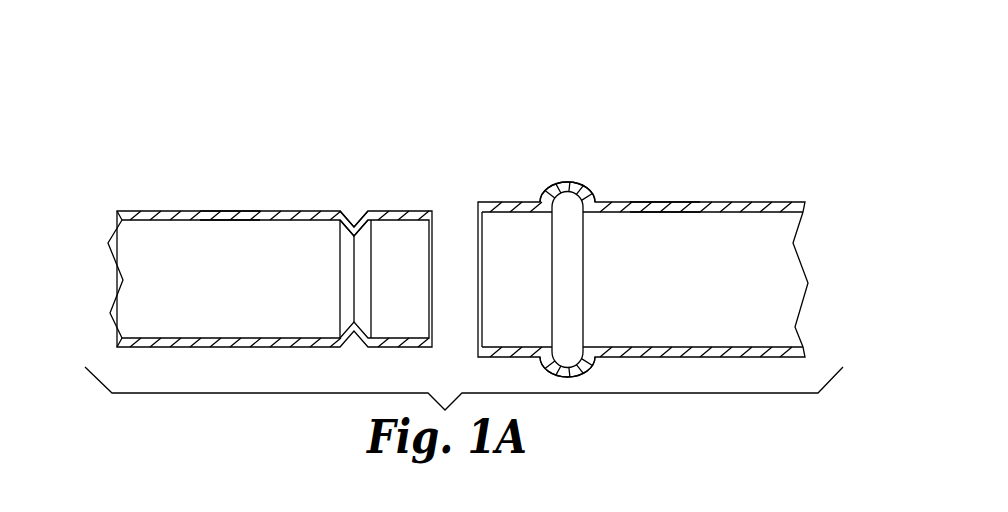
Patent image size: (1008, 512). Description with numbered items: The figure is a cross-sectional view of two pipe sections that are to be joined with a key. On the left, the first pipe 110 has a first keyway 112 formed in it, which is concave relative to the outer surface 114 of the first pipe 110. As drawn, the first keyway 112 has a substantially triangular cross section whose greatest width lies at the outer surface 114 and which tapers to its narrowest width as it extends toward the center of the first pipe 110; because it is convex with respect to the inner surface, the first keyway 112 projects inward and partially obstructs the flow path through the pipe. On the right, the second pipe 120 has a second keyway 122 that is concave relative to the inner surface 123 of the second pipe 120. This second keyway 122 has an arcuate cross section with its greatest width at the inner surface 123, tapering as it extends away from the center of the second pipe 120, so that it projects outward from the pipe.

The first pipe 110 is at (177, 207).
The first keyway 112 is at (356, 225).
The outer surface 114 is at (225, 217).
The second pipe 120 is at (722, 197).
The second keyway 122 is at (570, 194).
The inner surface 123 is at (662, 213).